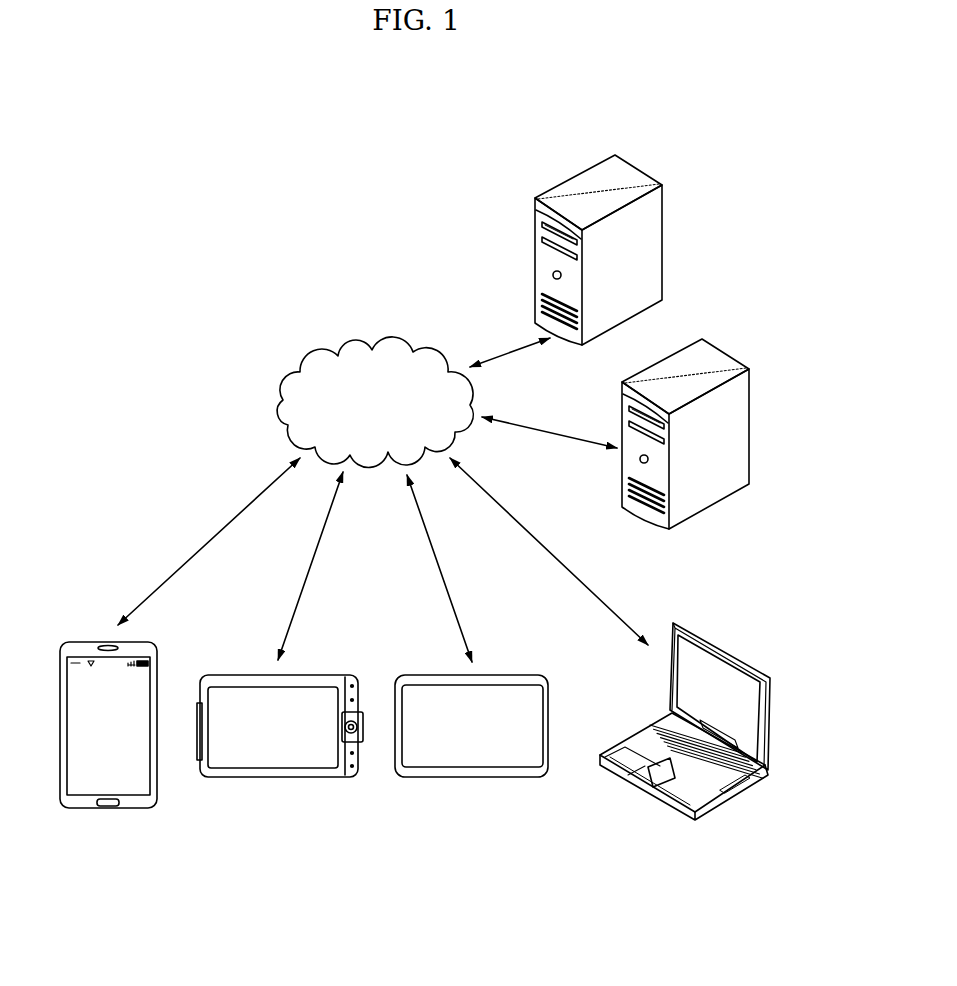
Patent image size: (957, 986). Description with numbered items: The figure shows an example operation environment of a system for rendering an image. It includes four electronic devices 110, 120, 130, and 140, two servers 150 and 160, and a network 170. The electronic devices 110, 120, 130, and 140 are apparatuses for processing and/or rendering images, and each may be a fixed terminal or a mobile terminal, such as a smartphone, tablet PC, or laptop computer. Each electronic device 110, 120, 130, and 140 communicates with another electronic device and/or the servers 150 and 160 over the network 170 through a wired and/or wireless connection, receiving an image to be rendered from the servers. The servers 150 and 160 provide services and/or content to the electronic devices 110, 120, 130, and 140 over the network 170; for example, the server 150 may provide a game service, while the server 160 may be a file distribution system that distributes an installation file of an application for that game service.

The electronic device 110 is at (108, 811).
The electronic device 120 is at (278, 779).
The electronic device 130 is at (470, 779).
The electronic device 140 is at (771, 722).
The server 150 is at (749, 423).
The server 160 is at (661, 240).
The network 170 is at (382, 338).